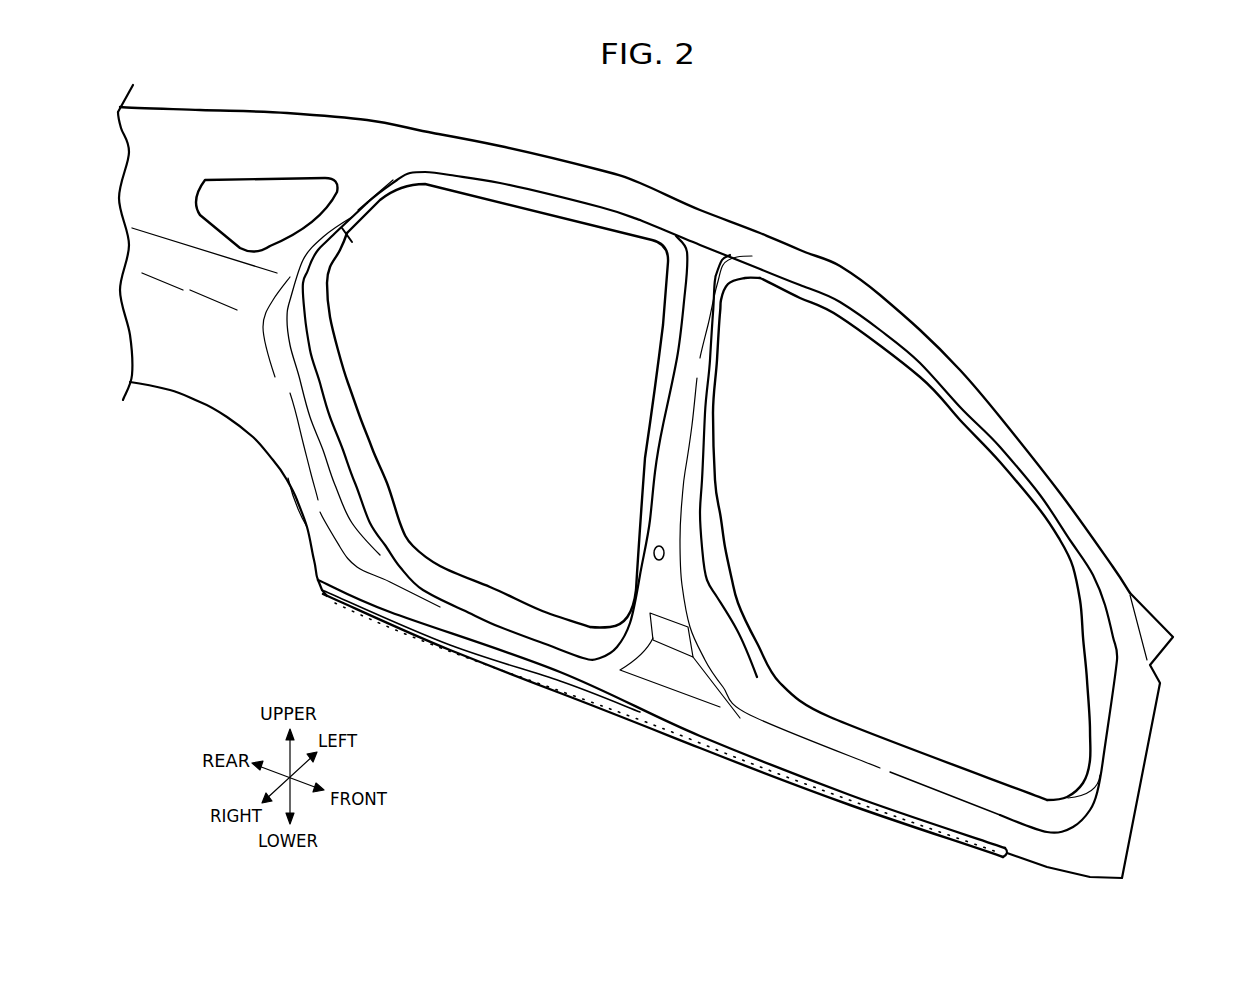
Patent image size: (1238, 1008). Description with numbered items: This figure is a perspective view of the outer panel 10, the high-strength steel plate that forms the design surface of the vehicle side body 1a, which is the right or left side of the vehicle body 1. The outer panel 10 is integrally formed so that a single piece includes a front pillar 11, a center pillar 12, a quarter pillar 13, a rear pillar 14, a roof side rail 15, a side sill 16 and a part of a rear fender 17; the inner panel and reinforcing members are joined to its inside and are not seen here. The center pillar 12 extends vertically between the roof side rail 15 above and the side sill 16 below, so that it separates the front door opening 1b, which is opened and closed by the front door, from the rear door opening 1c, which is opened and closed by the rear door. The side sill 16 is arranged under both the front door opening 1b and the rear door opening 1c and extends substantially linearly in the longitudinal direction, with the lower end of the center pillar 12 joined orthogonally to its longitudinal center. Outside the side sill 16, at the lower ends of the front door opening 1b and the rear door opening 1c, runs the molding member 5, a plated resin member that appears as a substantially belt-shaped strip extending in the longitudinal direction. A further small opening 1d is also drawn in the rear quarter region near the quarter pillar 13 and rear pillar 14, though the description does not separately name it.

The vehicle body 1 is at (881, 253).
The vehicle side body 1a is at (1127, 724).
The front door opening 1b is at (887, 537).
The rear door opening 1c is at (520, 418).
The quarter window opening 1d is at (268, 220).
The molding member 5 is at (531, 690).
The outer panel 10 is at (587, 165).
The front pillar 11 is at (997, 408).
The center pillar 12 is at (708, 323).
The quarter pillar 13 is at (352, 238).
The rear pillar 14 is at (248, 152).
The roof side rail 15 is at (677, 212).
The side sill 16 is at (787, 750).
The rear fender 17 is at (207, 317).